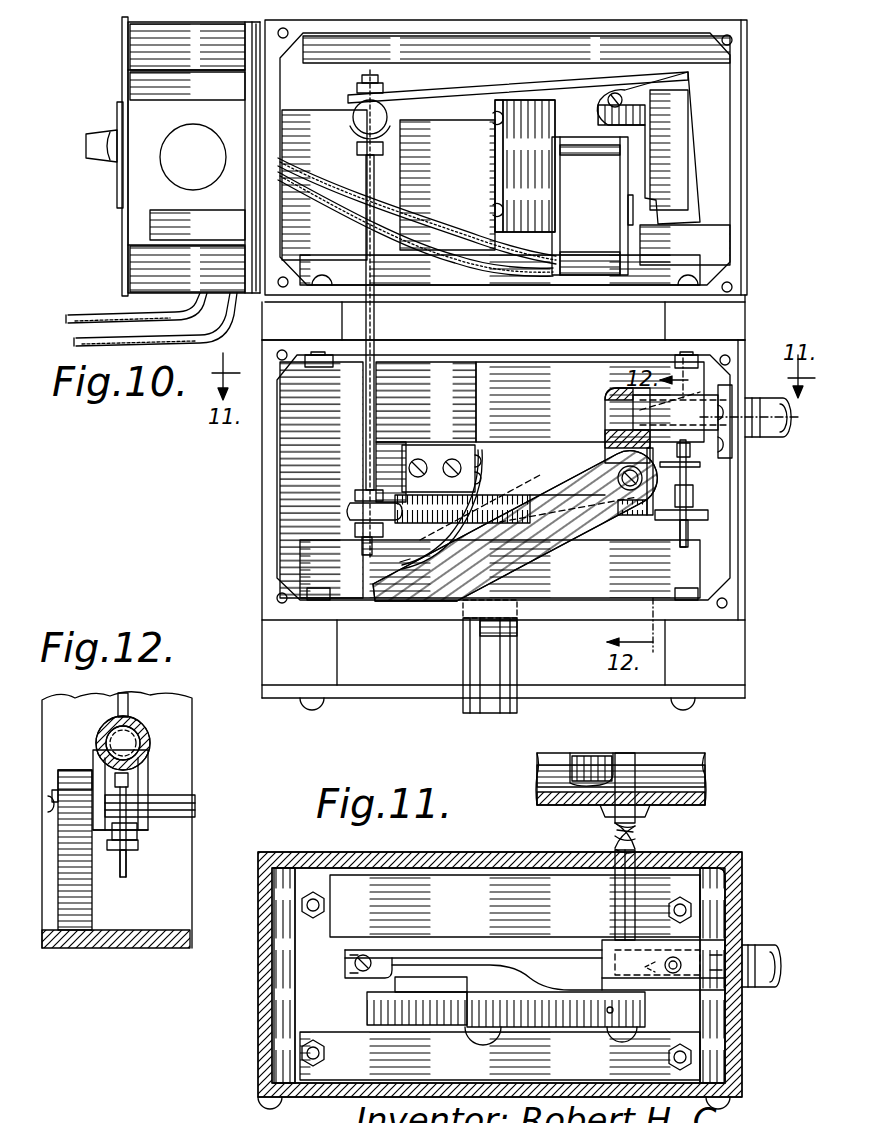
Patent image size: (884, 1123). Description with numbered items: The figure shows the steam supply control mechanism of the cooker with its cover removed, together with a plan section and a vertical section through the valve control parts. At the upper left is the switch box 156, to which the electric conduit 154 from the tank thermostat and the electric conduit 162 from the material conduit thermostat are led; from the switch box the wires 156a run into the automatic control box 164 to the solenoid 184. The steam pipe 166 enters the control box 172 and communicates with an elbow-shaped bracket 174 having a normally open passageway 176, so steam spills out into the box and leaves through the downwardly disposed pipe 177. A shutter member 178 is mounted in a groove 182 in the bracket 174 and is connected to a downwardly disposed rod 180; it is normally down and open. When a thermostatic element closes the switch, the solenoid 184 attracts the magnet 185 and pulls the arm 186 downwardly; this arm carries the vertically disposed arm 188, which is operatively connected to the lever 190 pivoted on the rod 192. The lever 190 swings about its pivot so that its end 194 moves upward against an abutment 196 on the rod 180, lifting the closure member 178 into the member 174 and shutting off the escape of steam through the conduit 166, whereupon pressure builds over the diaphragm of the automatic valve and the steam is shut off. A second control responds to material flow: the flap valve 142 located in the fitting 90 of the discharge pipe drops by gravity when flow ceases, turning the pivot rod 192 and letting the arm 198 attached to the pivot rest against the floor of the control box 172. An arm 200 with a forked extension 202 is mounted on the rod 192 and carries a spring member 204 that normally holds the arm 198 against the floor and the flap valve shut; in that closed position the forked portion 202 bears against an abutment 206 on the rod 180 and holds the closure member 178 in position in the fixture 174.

In FIG. 10, the switch box 156 is at (135, 212).
In FIG. 10, the electric conduit 154 is at (95, 316).
In FIG. 10, the electric conduit 162 is at (168, 338).
In FIG. 10, the wires 156a is at (320, 180).
In FIG. 10, the arm 186 is at (422, 92).
In FIG. 10, the magnet 185 is at (552, 176).
In FIG. 10, the solenoid 184 is at (612, 236).
In FIG. 10, the automatic control box 164 is at (742, 142).
In FIG. 10, the control box 172 is at (549, 340).
In FIG. 11, the control box 172 is at (258, 1000).
In FIG. 10, the vertically disposed arm 188 is at (366, 452).
In FIG. 10, the lever 190 is at (425, 513).
In FIG. 10, the arm 200 is at (492, 457).
In FIG. 10, the spring member 204 is at (460, 530).
In FIG. 10, the elbow-shaped bracket 174 is at (612, 412).
In FIG. 10, the passageway 176 is at (612, 440).
In FIG. 10, the abutment 206 is at (618, 474).
In FIG. 12, the abutment 206 is at (130, 780).
In FIG. 10, the shutter member 178 is at (710, 400).
In FIG. 12, the shutter member 178 is at (135, 745).
In FIG. 10, the steam pipe 166 is at (780, 437).
In FIG. 11, the steam pipe 166 is at (766, 990).
In FIG. 10, the forked extension 202 is at (700, 467).
In FIG. 10, the abutment 196 is at (693, 497).
In FIG. 12, the abutment 196 is at (140, 836).
In FIG. 10, the end 194 is at (708, 514).
In FIG. 10, the rod 180 is at (688, 538).
In FIG. 12, the rod 180 is at (128, 872).
In FIG. 10, the rod 192 is at (632, 493).
In FIG. 12, the rod 192 is at (195, 806).
In FIG. 11, the rod 192 is at (636, 886).
In FIG. 10, the arm 198 is at (392, 600).
In FIG. 10, the downwardly disposed pipe 177 is at (517, 664).
In FIG. 12, the groove 182 is at (110, 740).
In FIG. 11, the flap valve 142 is at (596, 760).
In FIG. 11, the fitting 90 is at (560, 805).